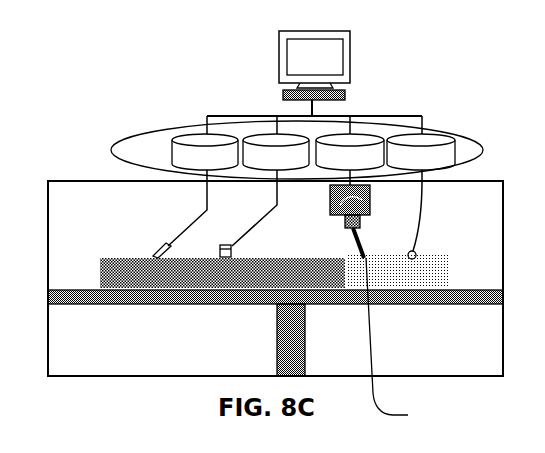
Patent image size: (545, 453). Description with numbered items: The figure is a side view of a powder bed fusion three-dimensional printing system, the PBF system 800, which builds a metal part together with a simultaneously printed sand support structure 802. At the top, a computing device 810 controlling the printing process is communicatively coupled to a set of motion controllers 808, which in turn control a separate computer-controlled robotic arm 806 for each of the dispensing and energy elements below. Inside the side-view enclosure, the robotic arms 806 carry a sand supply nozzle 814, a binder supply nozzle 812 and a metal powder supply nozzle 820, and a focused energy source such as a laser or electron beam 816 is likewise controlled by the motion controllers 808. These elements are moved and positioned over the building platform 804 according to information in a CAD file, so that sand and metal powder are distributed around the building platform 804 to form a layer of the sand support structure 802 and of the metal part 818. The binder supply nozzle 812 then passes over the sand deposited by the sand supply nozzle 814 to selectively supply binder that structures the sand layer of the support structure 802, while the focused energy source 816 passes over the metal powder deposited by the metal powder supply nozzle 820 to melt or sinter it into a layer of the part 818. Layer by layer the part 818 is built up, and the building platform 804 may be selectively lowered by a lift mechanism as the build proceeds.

The PBF system 800 is at (166, 344).
The sand support structure 802 is at (157, 258).
The building platform 804 is at (277, 312).
The robotic arm 806 is at (447, 201).
The motion controller 808 is at (114, 148).
The computing device 810 is at (279, 48).
The binder supply nozzle 812 is at (240, 251).
The sand supply nozzle 814 is at (151, 254).
The focused energy source 816 is at (370, 196).
The part 818 is at (399, 327).
The metal powder supply nozzle 820 is at (416, 251).